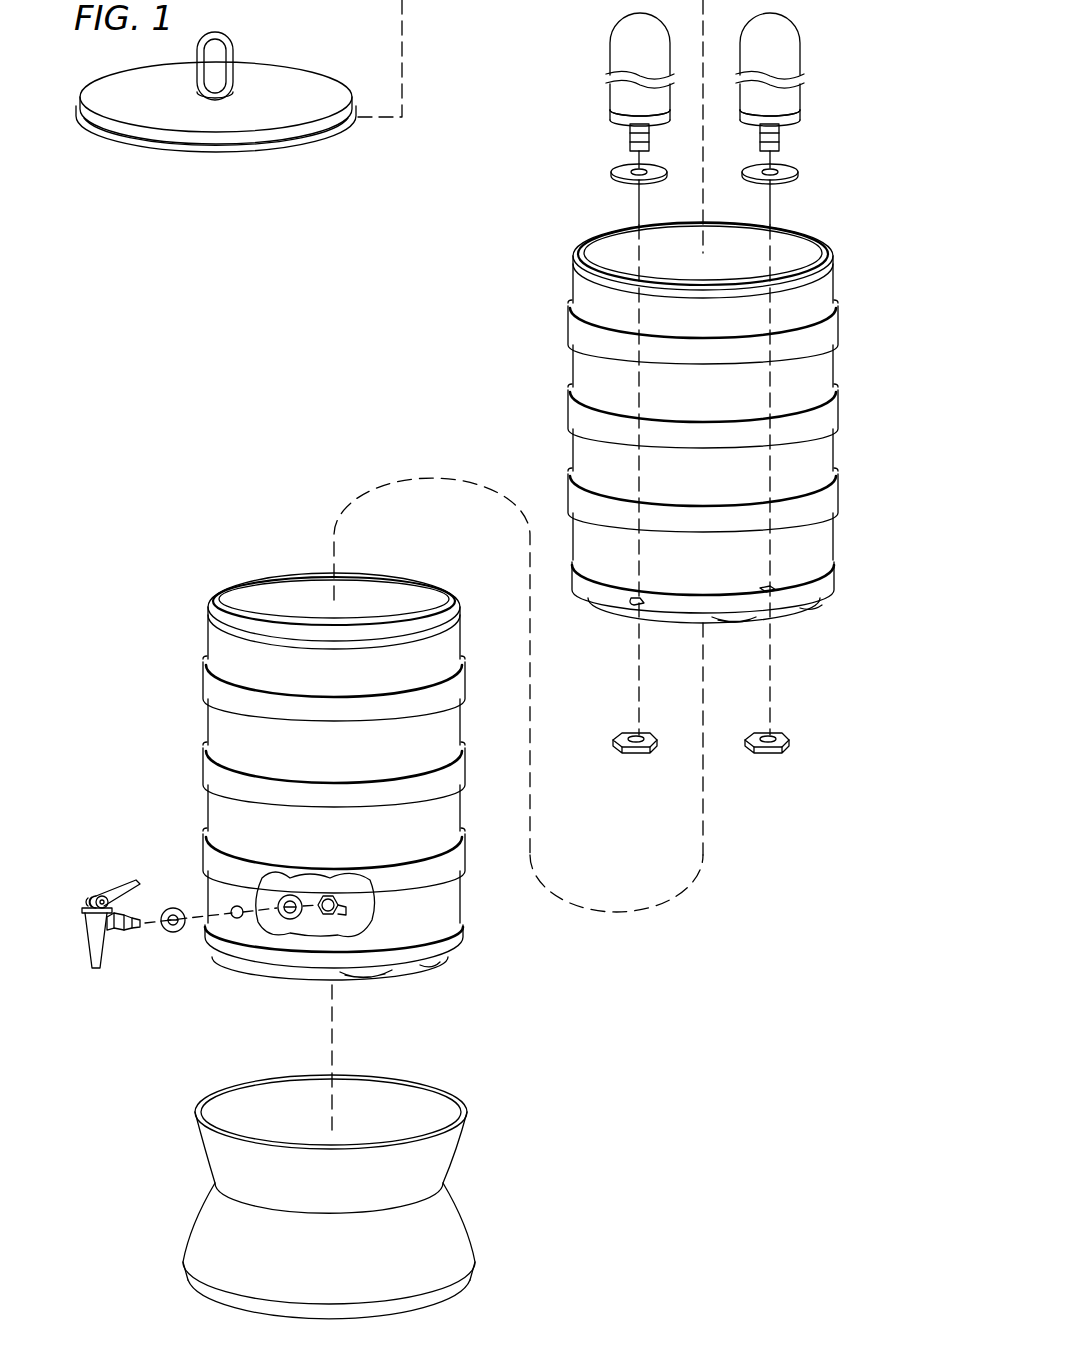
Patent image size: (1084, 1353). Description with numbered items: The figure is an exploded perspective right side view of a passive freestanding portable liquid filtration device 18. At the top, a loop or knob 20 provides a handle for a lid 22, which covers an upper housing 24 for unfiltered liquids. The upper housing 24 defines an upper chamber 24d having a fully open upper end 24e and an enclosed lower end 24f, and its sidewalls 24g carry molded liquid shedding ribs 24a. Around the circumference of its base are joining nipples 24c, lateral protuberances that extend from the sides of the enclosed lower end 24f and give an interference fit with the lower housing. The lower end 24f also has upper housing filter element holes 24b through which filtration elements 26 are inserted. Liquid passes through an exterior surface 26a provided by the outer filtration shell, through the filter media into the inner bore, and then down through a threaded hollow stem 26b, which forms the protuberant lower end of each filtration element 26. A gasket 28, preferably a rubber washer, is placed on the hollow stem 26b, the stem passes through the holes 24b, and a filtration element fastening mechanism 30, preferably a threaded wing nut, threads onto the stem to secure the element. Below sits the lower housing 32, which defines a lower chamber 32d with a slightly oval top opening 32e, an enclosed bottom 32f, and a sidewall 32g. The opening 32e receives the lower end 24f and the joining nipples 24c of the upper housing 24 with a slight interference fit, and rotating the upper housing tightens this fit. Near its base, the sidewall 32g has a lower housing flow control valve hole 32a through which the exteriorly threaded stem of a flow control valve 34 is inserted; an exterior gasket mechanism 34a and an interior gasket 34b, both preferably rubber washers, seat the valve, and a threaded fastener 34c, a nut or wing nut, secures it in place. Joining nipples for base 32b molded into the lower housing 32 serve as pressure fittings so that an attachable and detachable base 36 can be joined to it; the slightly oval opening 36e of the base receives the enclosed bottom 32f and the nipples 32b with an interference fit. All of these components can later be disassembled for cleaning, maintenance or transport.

The passive freestanding portable liquid filtration device 18 is at (527, 382).
The loop or knob 20 is at (226, 45).
The lid 22 is at (235, 148).
The upper housing 24 is at (590, 367).
The liquid shedding ribs 24a is at (575, 482).
The upper housing filter element holes 24b is at (770, 590).
The joining nipples 24c is at (812, 607).
The upper chamber 24d is at (820, 243).
The upper end 24e is at (600, 242).
The lower end 24f is at (622, 610).
The sidewalls 24g is at (820, 372).
The filtration element 26 is at (616, 60).
The exterior surface 26a is at (793, 100).
The hollow stem 26b is at (781, 145).
The gasket 28 is at (610, 175).
The filtration element fastening mechanism 30 is at (632, 755).
The lower housing 32 is at (212, 735).
The lower housing flow control valve hole 32a is at (232, 905).
The joining nipples for base 32b is at (436, 968).
The lower chamber 32d is at (385, 598).
The top opening 32e is at (242, 592).
The enclosed bottom 32f is at (285, 978).
The sidewall 32g is at (222, 647).
The flow control valve 34 is at (93, 945).
The exterior gasket mechanism 34a is at (175, 933).
The interior gasket 34b is at (290, 893).
The threaded fastener 34c is at (330, 893).
The base 36 is at (470, 1226).
The opening 36e is at (443, 1095).